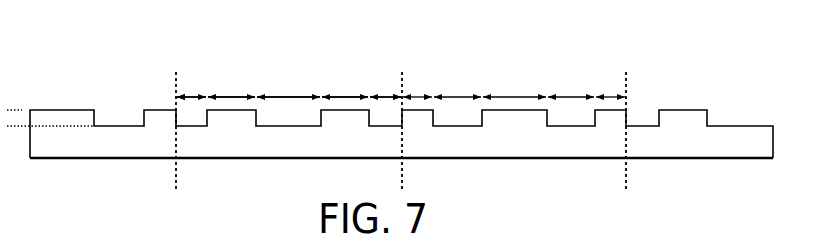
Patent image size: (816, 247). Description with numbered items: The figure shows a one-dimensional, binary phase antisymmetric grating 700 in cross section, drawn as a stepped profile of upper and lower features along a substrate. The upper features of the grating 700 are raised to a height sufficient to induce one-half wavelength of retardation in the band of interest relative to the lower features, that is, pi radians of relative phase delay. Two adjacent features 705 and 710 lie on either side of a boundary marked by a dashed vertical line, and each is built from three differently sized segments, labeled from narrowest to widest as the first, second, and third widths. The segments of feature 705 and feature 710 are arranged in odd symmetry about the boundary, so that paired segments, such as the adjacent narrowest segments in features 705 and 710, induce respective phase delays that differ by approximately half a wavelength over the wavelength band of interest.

The binary phase antisymmetric grating 700 is at (117, 46).
The feature 705 is at (400, 73).
The feature 710 is at (546, 73).